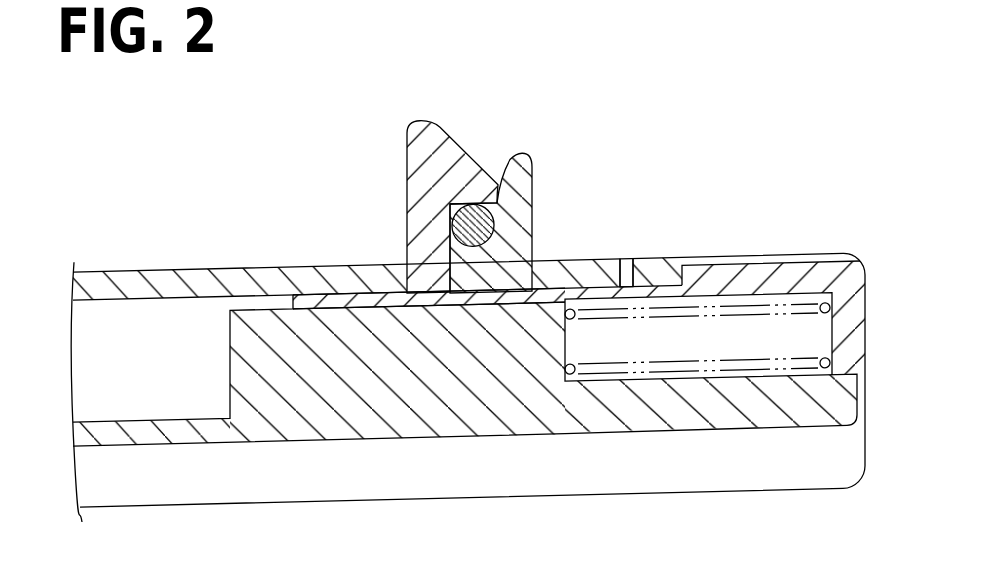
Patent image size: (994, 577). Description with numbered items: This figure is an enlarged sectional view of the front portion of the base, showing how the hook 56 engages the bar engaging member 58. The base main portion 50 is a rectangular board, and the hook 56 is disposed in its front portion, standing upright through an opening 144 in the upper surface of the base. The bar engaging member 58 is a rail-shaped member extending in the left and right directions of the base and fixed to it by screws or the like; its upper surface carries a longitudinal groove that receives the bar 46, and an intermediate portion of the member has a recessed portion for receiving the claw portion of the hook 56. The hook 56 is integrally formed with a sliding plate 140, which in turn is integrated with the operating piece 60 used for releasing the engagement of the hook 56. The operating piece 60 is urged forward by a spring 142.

The base main portion 50 is at (362, 441).
The operating piece 60 is at (760, 257).
The opening 144 is at (357, 293).
The sliding plate 140 is at (632, 260).
The hook 56 is at (438, 127).
The bar engaging member 58 is at (532, 178).
The bar 46 is at (492, 214).
The spring 142 is at (678, 366).